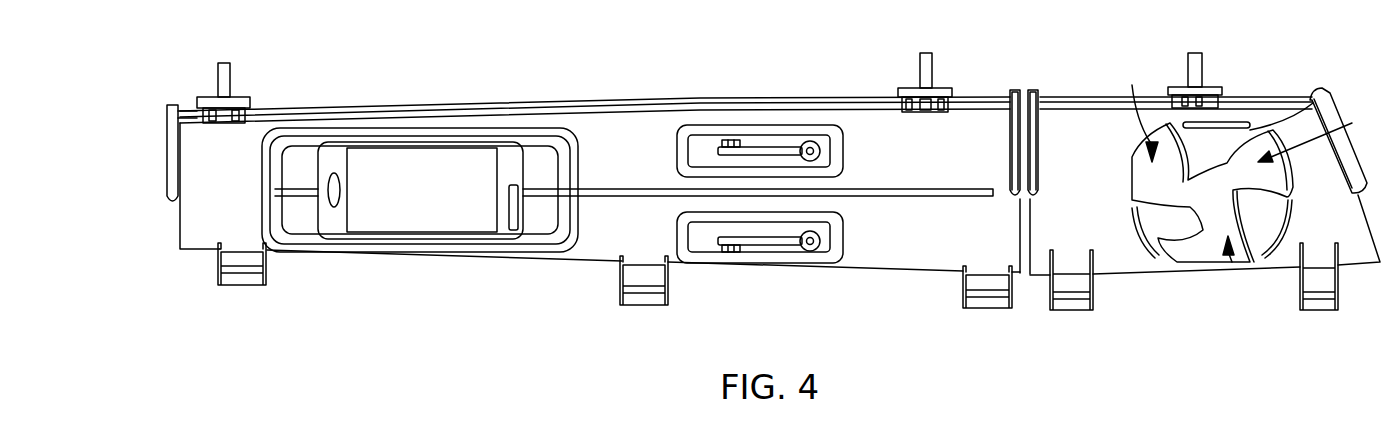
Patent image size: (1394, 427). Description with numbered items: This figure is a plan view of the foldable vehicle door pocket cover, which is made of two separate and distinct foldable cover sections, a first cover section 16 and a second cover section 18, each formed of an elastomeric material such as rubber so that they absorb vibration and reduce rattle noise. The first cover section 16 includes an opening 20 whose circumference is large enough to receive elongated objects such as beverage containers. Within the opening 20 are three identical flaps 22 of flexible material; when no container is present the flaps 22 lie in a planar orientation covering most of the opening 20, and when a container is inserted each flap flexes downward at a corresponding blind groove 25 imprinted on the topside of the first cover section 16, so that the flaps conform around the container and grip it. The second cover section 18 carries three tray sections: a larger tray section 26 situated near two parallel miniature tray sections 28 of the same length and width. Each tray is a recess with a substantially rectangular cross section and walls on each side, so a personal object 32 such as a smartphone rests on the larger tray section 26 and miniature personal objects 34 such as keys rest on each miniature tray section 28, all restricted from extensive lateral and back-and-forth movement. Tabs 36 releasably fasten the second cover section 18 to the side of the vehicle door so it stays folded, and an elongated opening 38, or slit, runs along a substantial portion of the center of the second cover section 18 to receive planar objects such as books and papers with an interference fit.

The first cover section 16 is at (1120, 260).
The second cover section 18 is at (910, 258).
The opening 20 is at (1244, 288).
The flaps 22 is at (1230, 138).
The blind groove 25 is at (1225, 124).
The larger tray section 26 is at (538, 150).
The miniature tray sections 28 is at (702, 145).
The personal object (smartphone) 32 is at (413, 217).
The miniature personal objects (keys) 34 is at (778, 148).
The tabs 36 is at (242, 288).
The elongated opening (slit) 38 is at (920, 191).